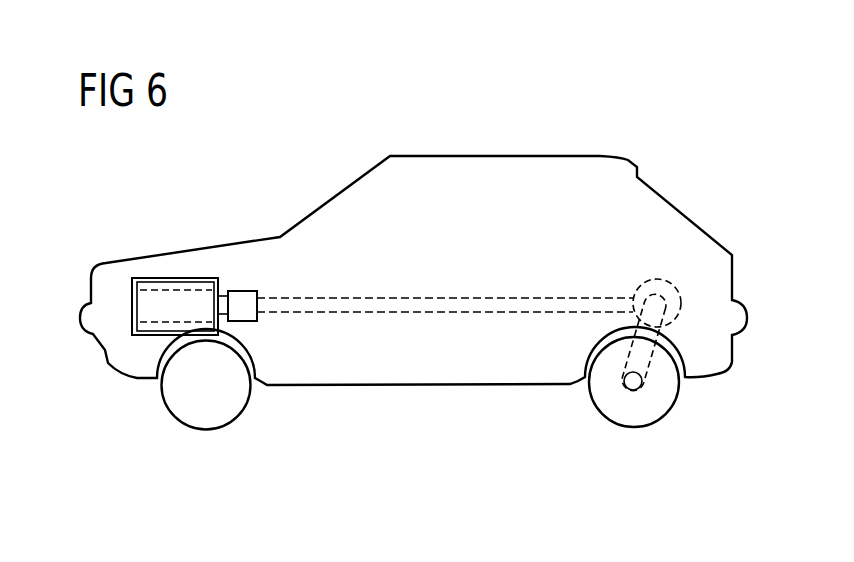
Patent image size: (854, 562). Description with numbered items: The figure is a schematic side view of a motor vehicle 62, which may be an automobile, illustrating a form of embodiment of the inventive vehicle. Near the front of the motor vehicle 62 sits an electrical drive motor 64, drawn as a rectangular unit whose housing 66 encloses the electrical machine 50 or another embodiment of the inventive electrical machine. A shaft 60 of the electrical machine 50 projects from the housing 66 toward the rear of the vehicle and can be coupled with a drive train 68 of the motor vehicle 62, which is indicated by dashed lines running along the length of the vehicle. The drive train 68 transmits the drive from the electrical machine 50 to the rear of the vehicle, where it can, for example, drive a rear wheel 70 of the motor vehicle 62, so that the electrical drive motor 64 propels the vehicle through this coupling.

The electrical machine 50 is at (173, 283).
The shaft 60 is at (222, 302).
The motor vehicle 62 is at (523, 155).
The electrical drive motor 64 is at (193, 262).
The housing 66 is at (142, 277).
The drive train 68 is at (425, 303).
The rear wheel 70 is at (634, 418).